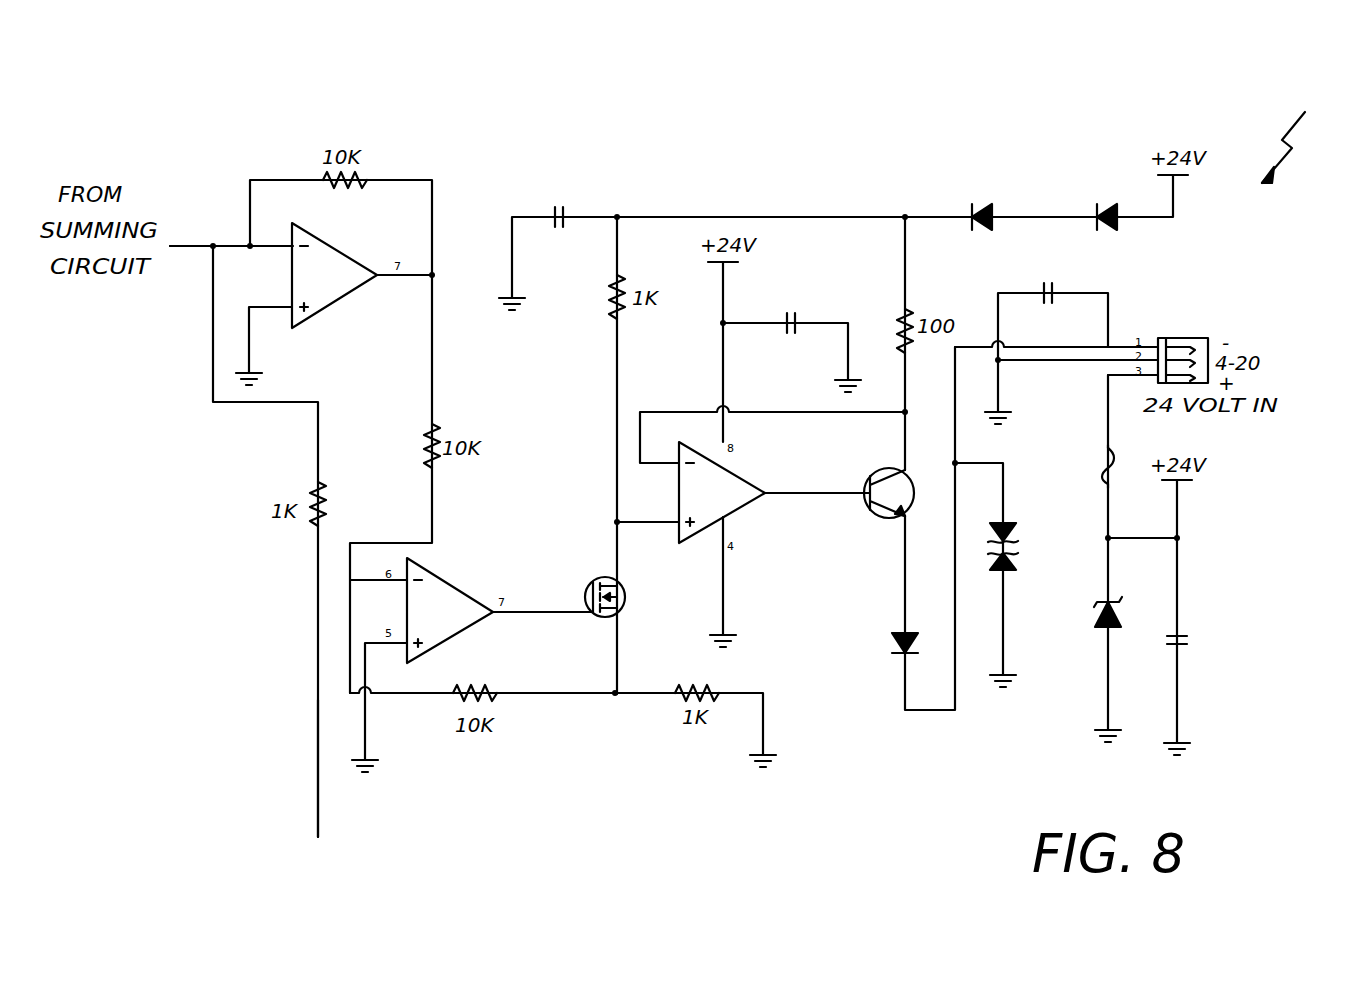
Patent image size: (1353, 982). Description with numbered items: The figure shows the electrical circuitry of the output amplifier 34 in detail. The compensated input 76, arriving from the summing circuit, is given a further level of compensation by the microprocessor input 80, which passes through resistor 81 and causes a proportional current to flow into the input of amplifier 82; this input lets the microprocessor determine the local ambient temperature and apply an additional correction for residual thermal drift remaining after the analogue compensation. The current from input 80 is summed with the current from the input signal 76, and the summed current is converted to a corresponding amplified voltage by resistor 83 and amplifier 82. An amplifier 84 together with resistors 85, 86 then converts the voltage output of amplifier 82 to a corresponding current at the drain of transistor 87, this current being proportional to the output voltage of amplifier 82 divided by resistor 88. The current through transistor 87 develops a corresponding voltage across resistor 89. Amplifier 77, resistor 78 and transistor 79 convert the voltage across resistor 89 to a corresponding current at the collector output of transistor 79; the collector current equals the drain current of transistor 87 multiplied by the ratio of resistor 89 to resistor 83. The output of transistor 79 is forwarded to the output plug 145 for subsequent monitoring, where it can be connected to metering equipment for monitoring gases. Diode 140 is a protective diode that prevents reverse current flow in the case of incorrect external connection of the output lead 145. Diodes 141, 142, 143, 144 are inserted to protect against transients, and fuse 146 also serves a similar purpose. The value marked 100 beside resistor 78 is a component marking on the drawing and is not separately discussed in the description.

The output amplifier 34 is at (1303, 136).
The compensated input 76 is at (186, 246).
The amplifier 77 is at (735, 512).
The resistor 78 is at (930, 308).
The transistor 79 is at (870, 478).
The microprocessor input 80 is at (318, 745).
The resistor 81 is at (307, 527).
The amplifier 82 is at (345, 297).
The resistor 83 is at (370, 172).
The amplifier 84 is at (442, 580).
The resistor 85 is at (500, 703).
The resistor 86 is at (420, 440).
The transistor 87 is at (625, 595).
The resistor 88 is at (680, 700).
The resistor 89 is at (613, 305).
The resistor value 100 is at (918, 308).
The diode 140 is at (890, 655).
The diode 141 is at (1017, 565).
The diode 142 is at (1098, 625).
The diode 143 is at (987, 212).
The diode 144 is at (1105, 234).
The output plug 145 is at (1172, 336).
The fuse 146 is at (1103, 460).